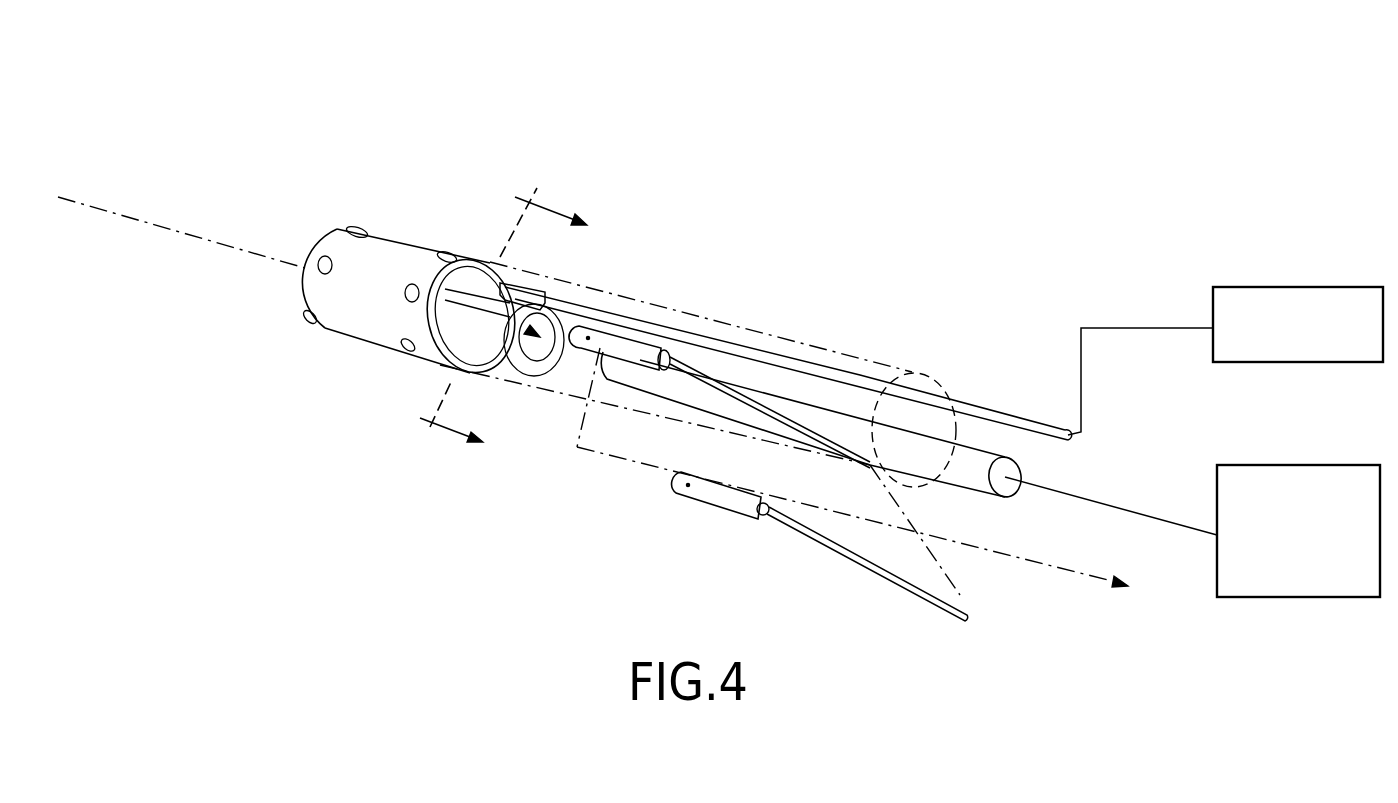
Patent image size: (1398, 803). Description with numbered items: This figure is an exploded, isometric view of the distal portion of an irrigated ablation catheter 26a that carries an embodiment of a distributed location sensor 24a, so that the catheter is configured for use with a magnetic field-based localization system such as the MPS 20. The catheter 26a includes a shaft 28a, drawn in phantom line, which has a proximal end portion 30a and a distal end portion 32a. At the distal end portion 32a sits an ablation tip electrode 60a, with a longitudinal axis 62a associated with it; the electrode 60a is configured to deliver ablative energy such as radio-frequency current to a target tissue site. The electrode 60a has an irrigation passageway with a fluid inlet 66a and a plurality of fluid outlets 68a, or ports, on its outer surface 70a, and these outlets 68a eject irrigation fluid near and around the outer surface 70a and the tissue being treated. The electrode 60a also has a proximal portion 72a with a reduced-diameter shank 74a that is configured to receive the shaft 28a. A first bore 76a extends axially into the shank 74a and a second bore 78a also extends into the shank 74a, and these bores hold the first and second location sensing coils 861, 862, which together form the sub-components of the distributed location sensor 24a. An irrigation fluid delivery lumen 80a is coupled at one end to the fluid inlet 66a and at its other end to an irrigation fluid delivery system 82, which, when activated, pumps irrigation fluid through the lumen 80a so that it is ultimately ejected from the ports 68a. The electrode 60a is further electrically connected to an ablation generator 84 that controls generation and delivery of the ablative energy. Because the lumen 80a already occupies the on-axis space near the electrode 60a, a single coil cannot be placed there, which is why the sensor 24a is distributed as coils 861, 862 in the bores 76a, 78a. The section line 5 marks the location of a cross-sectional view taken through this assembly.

The longitudinal axis 62a is at (90, 207).
The outer surface 70a is at (340, 240).
The fluid outlets 68a is at (310, 272).
The ablation tip electrode 60a is at (340, 388).
The section line 5- 5 is at (501, 312).
The distal end portion 32a is at (493, 235).
The first bore 76a is at (490, 257).
The proximal portion 72a is at (560, 265).
The fluid inlet 66a is at (512, 328).
The reduced-diameter shank 74a is at (477, 350).
The second bore 78a is at (564, 378).
The shaft 28a is at (728, 325).
The proximal end portion 30a is at (927, 362).
The irrigated ablation catheter 26a is at (762, 103).
The irrigation fluid delivery lumen 80a is at (985, 462).
The first location sensing coil 861 is at (617, 312).
The second location sensing coil 862 is at (717, 500).
The distributed location sensor 24a is at (918, 508).
The ablation generator 84 is at (1357, 287).
The irrigation fluid delivery system 82 is at (1350, 465).
The MPS 20 is at (885, 537).